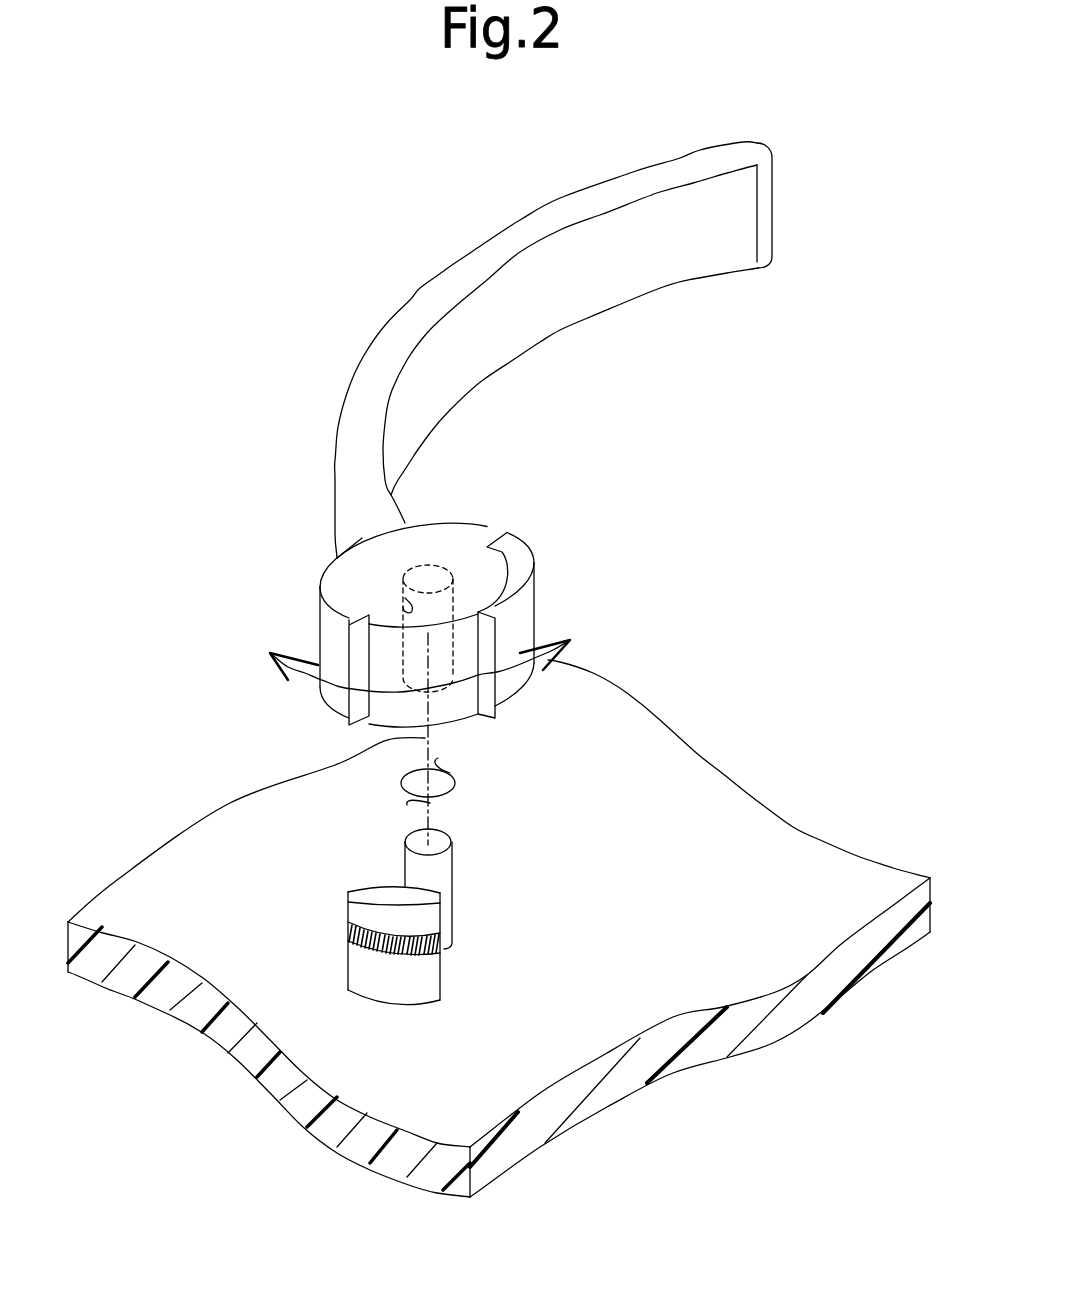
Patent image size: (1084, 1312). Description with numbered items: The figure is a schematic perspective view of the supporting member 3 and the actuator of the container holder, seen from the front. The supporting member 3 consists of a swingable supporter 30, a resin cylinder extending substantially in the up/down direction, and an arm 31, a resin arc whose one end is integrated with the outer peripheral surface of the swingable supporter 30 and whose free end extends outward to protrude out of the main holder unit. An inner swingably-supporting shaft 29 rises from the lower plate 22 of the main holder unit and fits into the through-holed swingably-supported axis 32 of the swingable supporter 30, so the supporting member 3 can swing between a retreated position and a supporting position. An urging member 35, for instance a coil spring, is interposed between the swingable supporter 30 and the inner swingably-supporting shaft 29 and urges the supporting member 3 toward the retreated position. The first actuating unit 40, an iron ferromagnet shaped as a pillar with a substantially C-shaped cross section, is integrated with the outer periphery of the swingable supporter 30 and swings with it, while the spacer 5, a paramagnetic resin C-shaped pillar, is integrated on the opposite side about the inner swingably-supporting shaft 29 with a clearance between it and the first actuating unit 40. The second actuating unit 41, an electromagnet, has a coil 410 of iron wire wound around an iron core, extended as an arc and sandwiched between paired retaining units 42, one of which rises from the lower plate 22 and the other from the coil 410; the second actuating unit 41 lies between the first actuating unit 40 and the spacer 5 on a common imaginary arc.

The supporting member 3 is at (435, 253).
The arm 31 is at (580, 300).
The swingable supporter 30 is at (443, 540).
The through-holed swingably-supported axis 32 is at (405, 598).
The first actuating unit 40 is at (518, 562).
The spacer 5 is at (352, 600).
The lower plate 22 is at (755, 826).
The urging member 35 is at (453, 787).
The inner swingably-supporting shaft 29 is at (452, 872).
The second actuating unit 41 is at (341, 905).
The coil 410 is at (348, 927).
The retaining units 42 is at (371, 889).